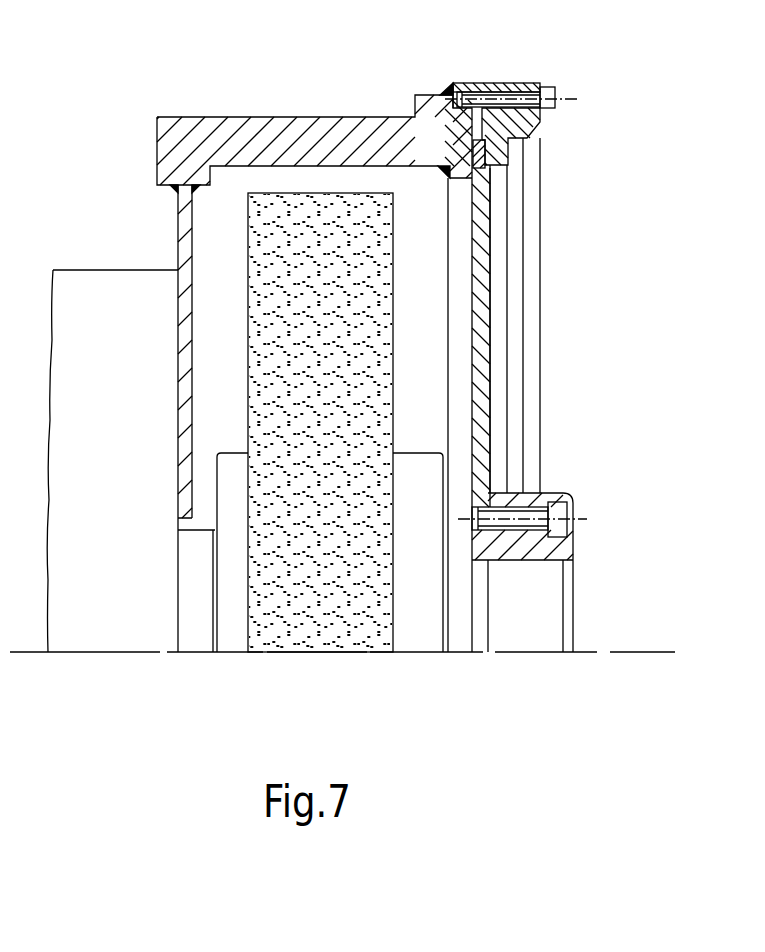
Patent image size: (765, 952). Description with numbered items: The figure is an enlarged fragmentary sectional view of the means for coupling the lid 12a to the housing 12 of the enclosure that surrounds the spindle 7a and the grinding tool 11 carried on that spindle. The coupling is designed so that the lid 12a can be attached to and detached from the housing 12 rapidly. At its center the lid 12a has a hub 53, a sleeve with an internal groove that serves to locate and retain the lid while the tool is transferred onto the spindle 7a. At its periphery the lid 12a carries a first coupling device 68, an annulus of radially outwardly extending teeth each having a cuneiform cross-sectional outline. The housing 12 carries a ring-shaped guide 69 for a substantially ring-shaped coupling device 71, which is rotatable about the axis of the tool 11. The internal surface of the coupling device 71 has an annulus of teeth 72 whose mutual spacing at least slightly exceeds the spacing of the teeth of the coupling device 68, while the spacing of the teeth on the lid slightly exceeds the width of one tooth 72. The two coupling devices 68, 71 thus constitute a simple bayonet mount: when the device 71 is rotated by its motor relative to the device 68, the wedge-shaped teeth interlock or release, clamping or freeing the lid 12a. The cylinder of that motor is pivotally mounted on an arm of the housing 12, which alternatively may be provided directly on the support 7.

The support 7 is at (78, 290).
The spindle 7a is at (202, 630).
The tool 11 is at (275, 350).
The housing 12 is at (305, 135).
The lid 12a is at (487, 325).
The hub 53 is at (537, 503).
The first coupling device 68 is at (490, 160).
The ring-shaped guide 69 is at (541, 124).
The ring-shaped coupling device 71 is at (475, 127).
The teeth 72 is at (493, 152).